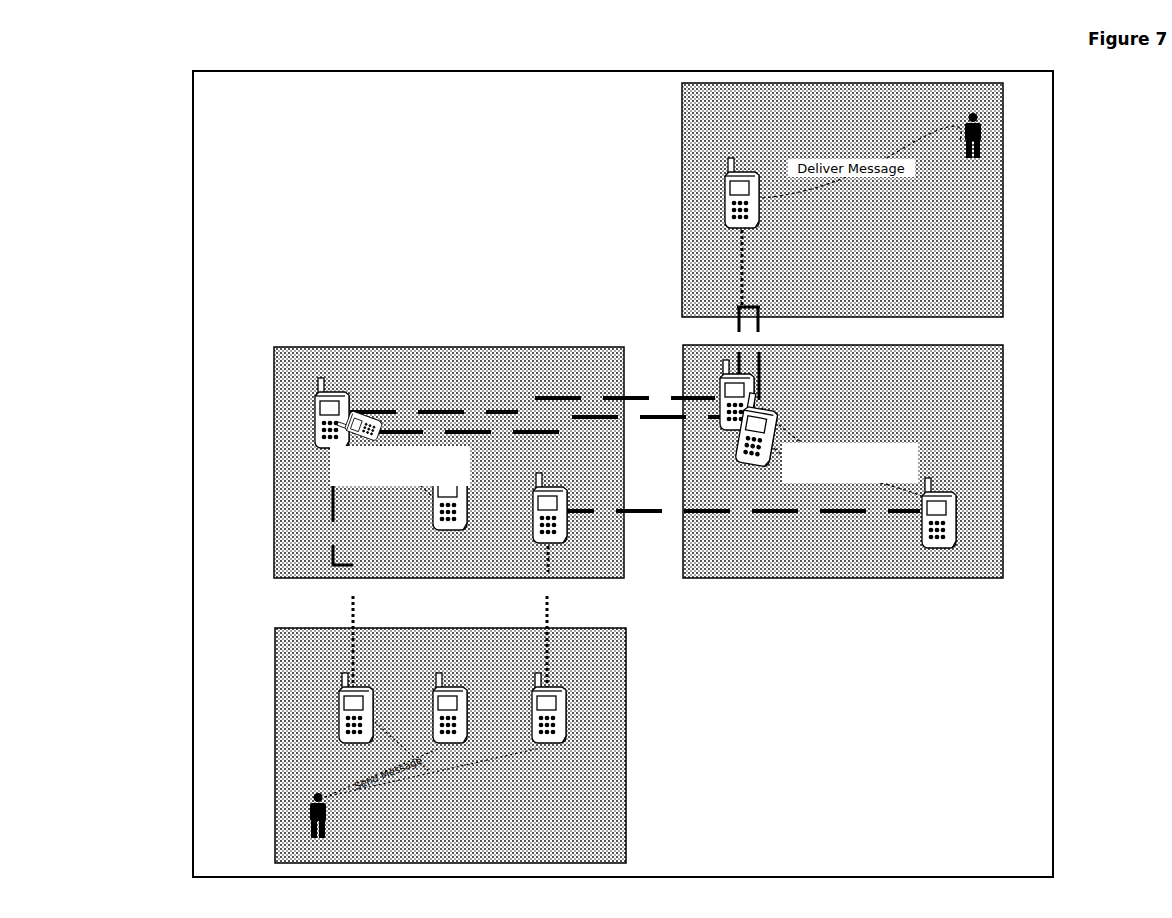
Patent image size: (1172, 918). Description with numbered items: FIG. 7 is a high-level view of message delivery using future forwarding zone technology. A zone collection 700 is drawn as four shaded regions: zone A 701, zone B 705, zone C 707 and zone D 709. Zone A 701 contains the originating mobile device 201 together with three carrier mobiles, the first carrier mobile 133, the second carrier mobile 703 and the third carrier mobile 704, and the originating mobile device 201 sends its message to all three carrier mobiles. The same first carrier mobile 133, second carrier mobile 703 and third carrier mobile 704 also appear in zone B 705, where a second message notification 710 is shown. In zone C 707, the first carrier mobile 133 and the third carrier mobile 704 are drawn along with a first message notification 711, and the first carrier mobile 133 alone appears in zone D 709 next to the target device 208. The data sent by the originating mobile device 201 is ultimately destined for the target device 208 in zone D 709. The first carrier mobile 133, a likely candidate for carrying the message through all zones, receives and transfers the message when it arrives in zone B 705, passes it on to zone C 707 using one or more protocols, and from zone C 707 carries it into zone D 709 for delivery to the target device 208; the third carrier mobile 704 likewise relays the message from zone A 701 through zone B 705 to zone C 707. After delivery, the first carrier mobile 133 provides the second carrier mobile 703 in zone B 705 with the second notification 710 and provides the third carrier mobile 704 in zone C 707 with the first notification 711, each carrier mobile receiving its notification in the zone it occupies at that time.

The zone collection 700 is at (623, 454).
The carrier mobile CM-1 133 is at (715, 192).
The target device 208 is at (996, 140).
The zone D 709 is at (996, 285).
The zone C 707 is at (996, 370).
The zone B 705 is at (588, 358).
The zone A 701 is at (624, 672).
The second message notification 710 is at (335, 465).
The first message notification 711 is at (912, 466).
The carrier mobile CM-2 703 is at (453, 676).
The carrier mobile CM-3 704 is at (918, 562).
The originating mobile device 201 is at (302, 815).